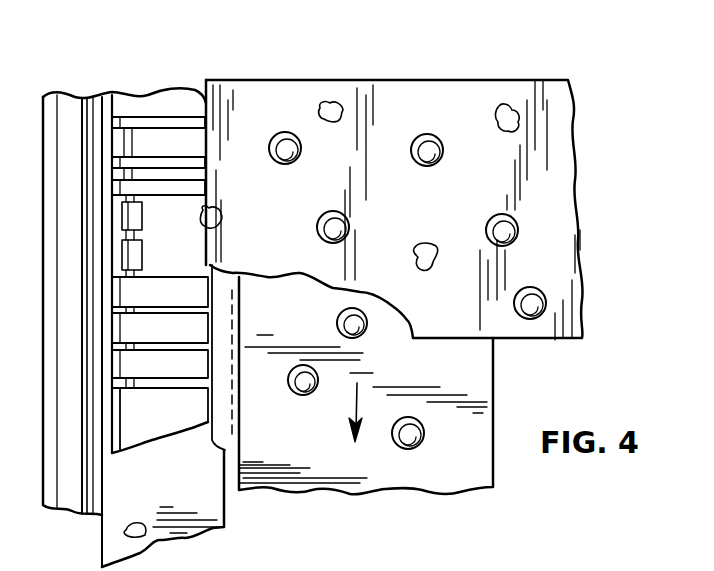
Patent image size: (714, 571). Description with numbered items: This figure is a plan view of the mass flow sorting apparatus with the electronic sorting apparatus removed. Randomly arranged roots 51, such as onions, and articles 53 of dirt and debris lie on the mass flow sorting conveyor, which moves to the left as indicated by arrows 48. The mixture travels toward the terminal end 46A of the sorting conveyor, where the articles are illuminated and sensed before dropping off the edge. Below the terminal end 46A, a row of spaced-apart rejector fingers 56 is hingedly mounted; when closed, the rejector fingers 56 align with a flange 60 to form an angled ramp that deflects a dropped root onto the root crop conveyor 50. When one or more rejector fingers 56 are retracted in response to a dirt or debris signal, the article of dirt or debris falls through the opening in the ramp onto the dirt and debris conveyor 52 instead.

The rejector fingers 56 is at (133, 88).
The terminal end of the sorting conveyor 46A is at (205, 103).
The arrows 48 is at (398, 204).
The root crop conveyor 50 is at (308, 445).
The roots 51 is at (283, 141).
The dirt and debris conveyor 52 is at (192, 478).
The articles of dirt and debris 53 is at (493, 121).
The flange 60 is at (225, 347).